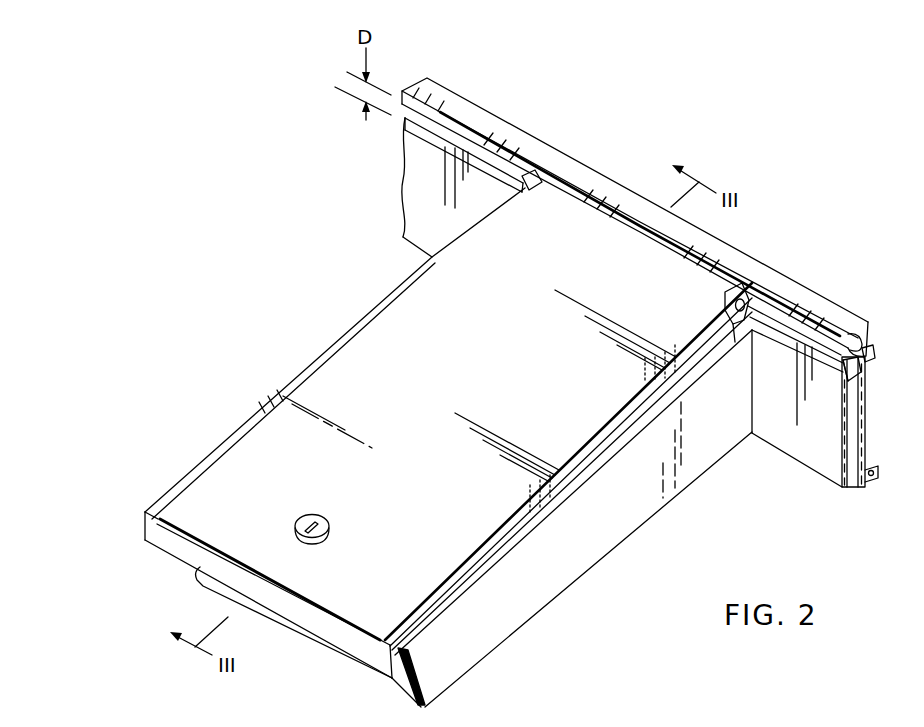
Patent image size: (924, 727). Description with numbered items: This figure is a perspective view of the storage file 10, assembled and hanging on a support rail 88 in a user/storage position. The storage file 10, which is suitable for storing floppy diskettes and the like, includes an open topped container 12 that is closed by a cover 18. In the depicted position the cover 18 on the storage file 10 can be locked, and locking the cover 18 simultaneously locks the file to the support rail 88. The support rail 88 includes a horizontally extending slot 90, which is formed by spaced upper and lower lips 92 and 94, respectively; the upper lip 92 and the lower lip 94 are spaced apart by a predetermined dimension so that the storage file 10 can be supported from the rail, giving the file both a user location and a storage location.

The storage file 10 is at (718, 545).
The open topped container 12 is at (516, 622).
The cover 18 is at (160, 546).
The support rail 88 is at (748, 272).
The horizontally extending slot 90 is at (440, 114).
The upper lip 92 is at (866, 343).
The lower lip 94 is at (865, 368).